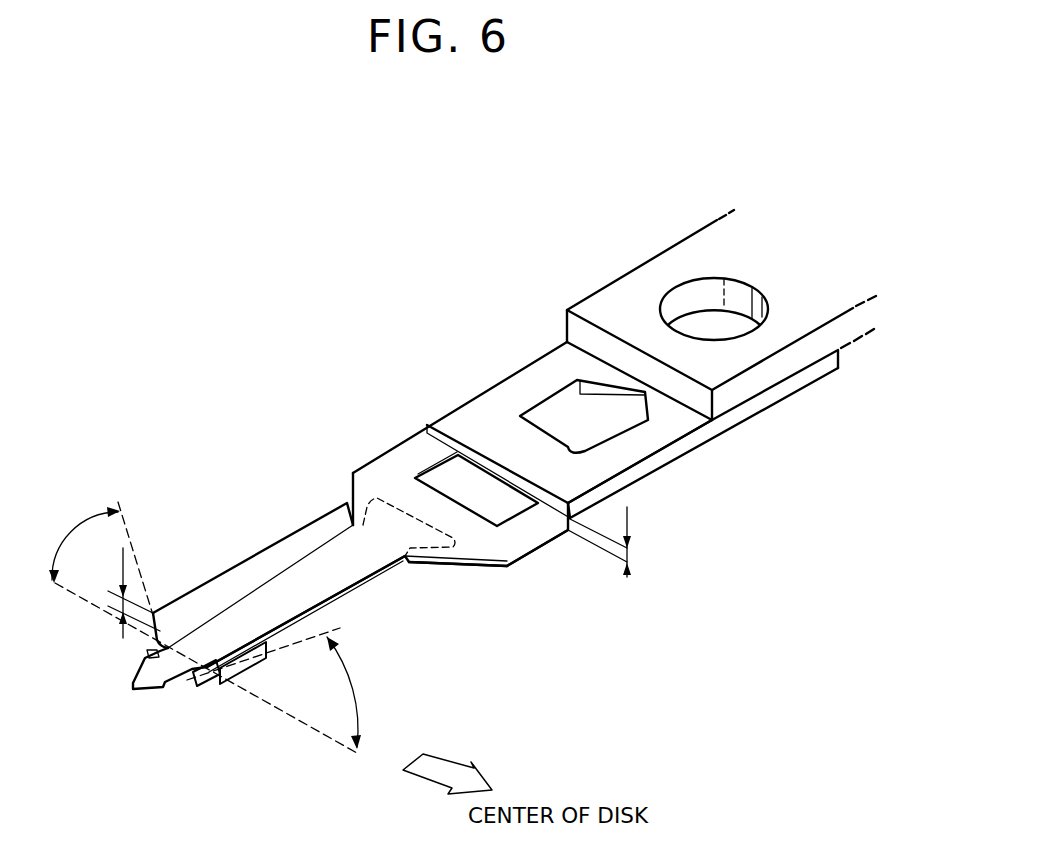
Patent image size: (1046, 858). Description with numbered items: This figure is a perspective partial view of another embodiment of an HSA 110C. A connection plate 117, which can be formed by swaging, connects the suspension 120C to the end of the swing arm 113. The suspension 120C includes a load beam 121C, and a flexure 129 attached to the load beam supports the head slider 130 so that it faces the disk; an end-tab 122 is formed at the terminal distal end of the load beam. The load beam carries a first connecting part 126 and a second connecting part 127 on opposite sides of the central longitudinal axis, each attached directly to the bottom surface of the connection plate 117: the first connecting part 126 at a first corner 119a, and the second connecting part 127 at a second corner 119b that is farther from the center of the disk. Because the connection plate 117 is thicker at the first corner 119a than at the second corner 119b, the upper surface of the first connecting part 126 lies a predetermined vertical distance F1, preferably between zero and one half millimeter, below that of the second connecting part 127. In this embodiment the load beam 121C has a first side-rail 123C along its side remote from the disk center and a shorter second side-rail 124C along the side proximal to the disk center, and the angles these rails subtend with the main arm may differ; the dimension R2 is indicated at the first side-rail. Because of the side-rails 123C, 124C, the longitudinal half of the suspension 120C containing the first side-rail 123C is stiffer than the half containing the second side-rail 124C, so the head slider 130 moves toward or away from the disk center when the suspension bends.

The HSA 110C is at (510, 291).
The swing arm 113 is at (617, 300).
The connection plate 117 is at (540, 368).
The first corner 119a is at (553, 498).
The second corner 119b is at (432, 432).
The suspension 120C is at (474, 580).
The load beam 121C is at (513, 548).
The end-tab 122 is at (143, 690).
The first side-rail 123C is at (265, 548).
The second side-rail 124C is at (340, 600).
The first connecting part 126 is at (530, 522).
The second connecting part 127 is at (428, 450).
The flexure 129 is at (199, 687).
The head slider 130 is at (250, 664).
The predetermined vertical distance F1 is at (614, 542).
The bend radius R2 is at (126, 593).